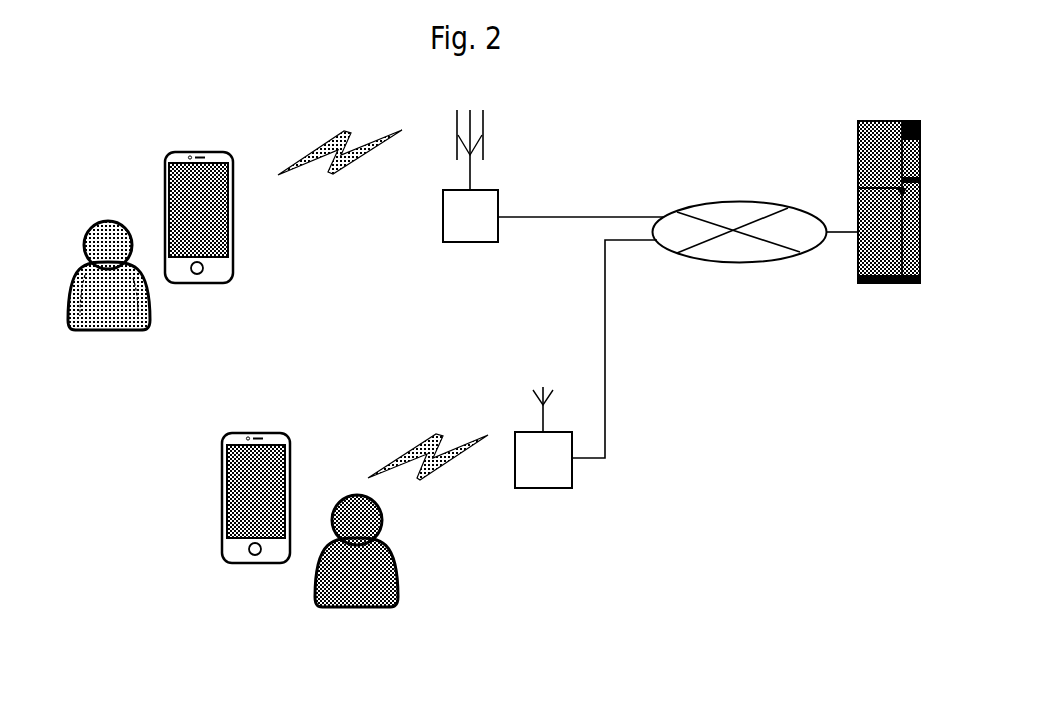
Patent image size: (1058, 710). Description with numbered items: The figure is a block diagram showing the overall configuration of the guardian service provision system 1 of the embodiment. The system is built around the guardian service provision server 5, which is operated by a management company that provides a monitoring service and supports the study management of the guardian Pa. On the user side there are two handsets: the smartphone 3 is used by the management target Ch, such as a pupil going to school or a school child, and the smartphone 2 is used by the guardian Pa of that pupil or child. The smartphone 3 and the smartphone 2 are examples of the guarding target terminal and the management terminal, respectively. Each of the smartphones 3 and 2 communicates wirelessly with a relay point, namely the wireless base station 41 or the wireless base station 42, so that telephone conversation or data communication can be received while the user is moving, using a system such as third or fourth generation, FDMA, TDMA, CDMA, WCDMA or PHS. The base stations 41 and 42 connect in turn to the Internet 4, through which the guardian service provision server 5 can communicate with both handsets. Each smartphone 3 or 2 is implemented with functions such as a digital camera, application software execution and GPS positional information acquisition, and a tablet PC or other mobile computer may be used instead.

The guardian service provision system 1 is at (569, 127).
The smartphone 2 is at (224, 558).
The smartphone 3 is at (233, 283).
The Internet 4 is at (735, 201).
The guardian service provision server 5 is at (887, 121).
The wireless base station 41 is at (470, 243).
The wireless base station 42 is at (548, 490).
The management target Ch is at (150, 314).
The guardian Pa is at (398, 590).